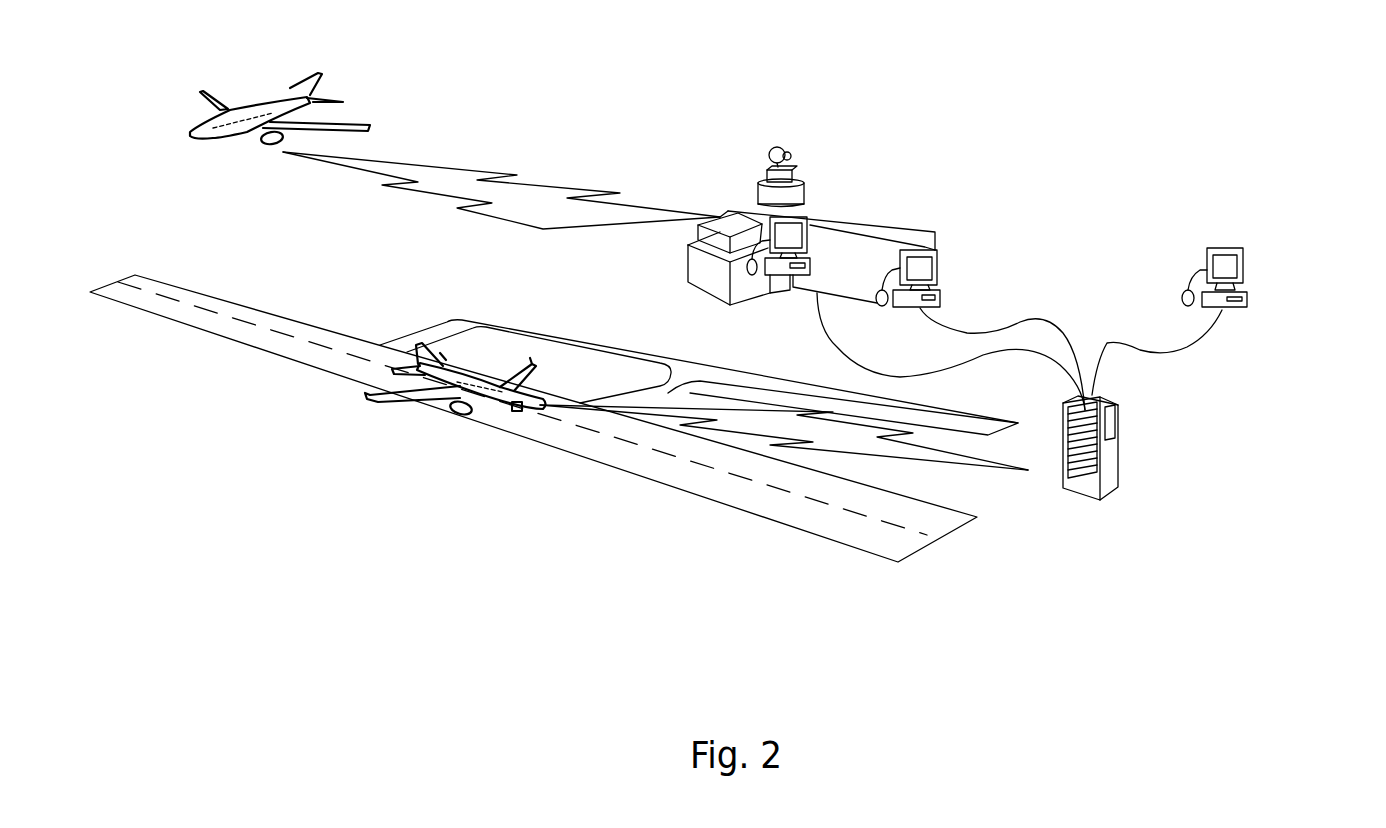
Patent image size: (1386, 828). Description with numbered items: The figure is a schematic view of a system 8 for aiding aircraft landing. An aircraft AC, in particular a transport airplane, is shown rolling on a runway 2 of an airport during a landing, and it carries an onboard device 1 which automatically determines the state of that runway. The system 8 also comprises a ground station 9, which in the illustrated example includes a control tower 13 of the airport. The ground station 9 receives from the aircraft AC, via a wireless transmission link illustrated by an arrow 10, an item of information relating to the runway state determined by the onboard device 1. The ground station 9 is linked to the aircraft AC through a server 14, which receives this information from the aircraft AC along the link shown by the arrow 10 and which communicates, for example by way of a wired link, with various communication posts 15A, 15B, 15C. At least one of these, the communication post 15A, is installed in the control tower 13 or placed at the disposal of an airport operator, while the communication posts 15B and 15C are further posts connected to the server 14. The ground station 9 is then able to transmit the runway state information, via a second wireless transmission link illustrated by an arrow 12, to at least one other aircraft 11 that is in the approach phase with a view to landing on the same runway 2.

The device 1 is at (517, 414).
The runway 2 is at (787, 523).
The system for aiding landing 8 is at (752, 98).
The ground station 9 is at (808, 160).
The arrow 10 is at (733, 430).
The aircraft 11 is at (222, 137).
The arrow 12 is at (567, 219).
The control tower 13 is at (795, 190).
The server 14 is at (1110, 460).
The communication post 15A is at (780, 243).
The communication post 15B is at (920, 268).
The communication post 15C is at (1230, 270).
The aircraft AC is at (410, 415).